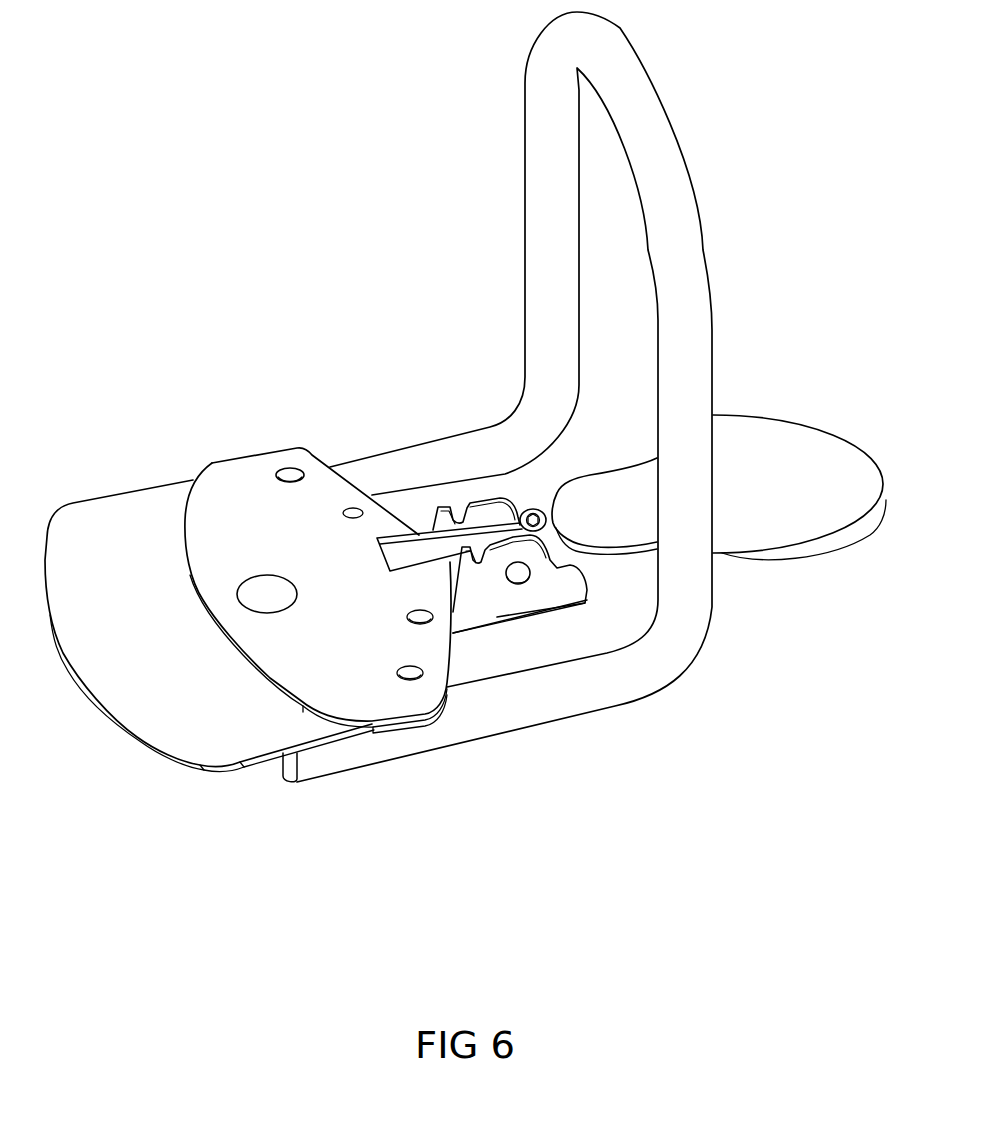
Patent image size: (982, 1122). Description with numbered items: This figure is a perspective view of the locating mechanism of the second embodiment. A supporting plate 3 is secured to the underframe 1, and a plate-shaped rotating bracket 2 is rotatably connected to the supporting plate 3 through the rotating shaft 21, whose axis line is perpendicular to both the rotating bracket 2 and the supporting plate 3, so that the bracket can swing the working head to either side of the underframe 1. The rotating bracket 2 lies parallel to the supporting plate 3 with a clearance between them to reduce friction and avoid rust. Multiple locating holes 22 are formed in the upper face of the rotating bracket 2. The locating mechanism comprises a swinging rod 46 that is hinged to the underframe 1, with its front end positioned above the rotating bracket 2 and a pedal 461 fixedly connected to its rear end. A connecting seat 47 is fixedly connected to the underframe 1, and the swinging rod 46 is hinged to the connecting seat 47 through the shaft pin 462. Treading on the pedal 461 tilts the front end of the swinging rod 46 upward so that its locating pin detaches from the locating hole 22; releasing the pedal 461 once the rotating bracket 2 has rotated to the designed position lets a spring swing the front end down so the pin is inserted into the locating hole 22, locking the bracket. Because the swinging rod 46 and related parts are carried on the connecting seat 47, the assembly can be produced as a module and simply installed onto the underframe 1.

The underframe 1 is at (460, 714).
The rotating bracket 2 is at (352, 642).
The supporting plate 3 is at (193, 653).
The rotating shaft 21 is at (267, 593).
The locating hole 22 is at (290, 475).
The swinging rod 46 is at (437, 547).
The connecting seat 47 is at (492, 597).
The pedal 461 is at (770, 485).
The shaft pin 462 is at (520, 580).